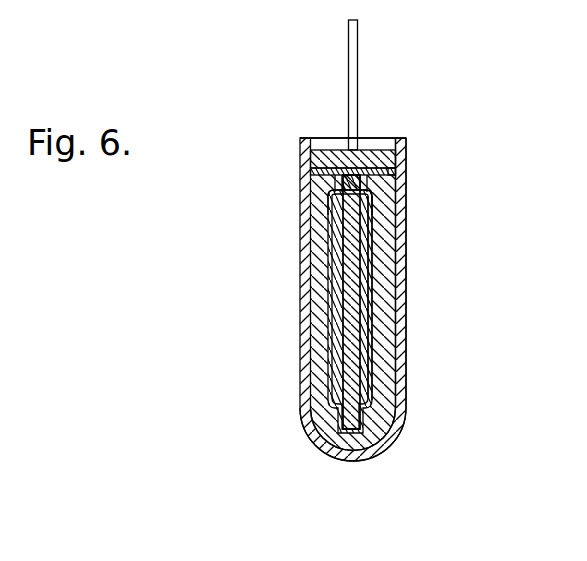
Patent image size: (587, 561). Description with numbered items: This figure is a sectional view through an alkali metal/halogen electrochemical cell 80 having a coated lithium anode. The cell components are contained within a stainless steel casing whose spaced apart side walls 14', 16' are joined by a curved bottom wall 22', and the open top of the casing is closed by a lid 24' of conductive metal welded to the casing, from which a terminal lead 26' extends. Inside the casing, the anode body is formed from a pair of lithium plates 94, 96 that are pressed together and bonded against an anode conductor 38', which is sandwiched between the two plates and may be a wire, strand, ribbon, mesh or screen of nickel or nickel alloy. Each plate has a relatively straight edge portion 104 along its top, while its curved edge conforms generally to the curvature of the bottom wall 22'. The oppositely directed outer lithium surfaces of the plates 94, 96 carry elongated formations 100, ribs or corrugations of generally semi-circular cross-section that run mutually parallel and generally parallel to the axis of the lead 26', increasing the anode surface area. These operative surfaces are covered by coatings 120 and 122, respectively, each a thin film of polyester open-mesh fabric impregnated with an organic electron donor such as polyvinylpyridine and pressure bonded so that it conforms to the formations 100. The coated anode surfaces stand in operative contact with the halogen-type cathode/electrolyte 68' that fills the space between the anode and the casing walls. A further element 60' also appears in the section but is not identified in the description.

The alkali metal/halogen electrochemical cell 80 is at (401, 105).
The side wall 14' is at (316, 299).
The side wall 16' is at (439, 273).
The curved bottom wall 22' is at (372, 451).
The lid 24' is at (334, 127).
The terminal lead 26' is at (315, 85).
The anode conductor 38' is at (408, 302).
The upper end of tube 60' is at (387, 148).
The cathode/electrolyte 68' is at (345, 313).
The lithium plate 94 is at (335, 182).
The lithium plate 96 is at (396, 172).
The formations 100 is at (330, 212).
The straight edge portion 104 is at (312, 172).
The coating 120 is at (330, 246).
The coating 122 is at (373, 240).